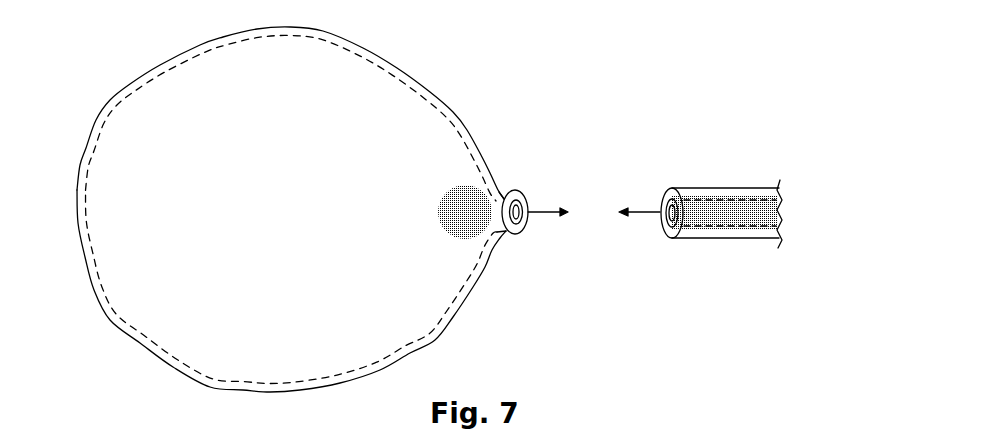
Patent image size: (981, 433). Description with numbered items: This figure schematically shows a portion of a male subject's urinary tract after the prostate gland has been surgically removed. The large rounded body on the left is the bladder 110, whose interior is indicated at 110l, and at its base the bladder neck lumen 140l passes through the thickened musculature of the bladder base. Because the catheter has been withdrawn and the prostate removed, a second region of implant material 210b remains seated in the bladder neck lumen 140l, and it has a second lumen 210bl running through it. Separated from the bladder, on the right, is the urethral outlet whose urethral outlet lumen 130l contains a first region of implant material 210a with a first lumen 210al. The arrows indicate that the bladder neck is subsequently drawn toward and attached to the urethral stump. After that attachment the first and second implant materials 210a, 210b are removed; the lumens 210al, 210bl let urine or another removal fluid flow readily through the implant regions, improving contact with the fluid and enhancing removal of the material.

The bladder 110 is at (448, 113).
The balloon inner wall layer 110l is at (453, 158).
The bladder neck lumen 140l is at (505, 237).
The second region of implant material 210b is at (499, 202).
The second lumen 210bl is at (527, 228).
The urethral outlet lumen 130l is at (692, 200).
The first region of implant material 210a is at (697, 213).
The first lumen 210al is at (667, 208).